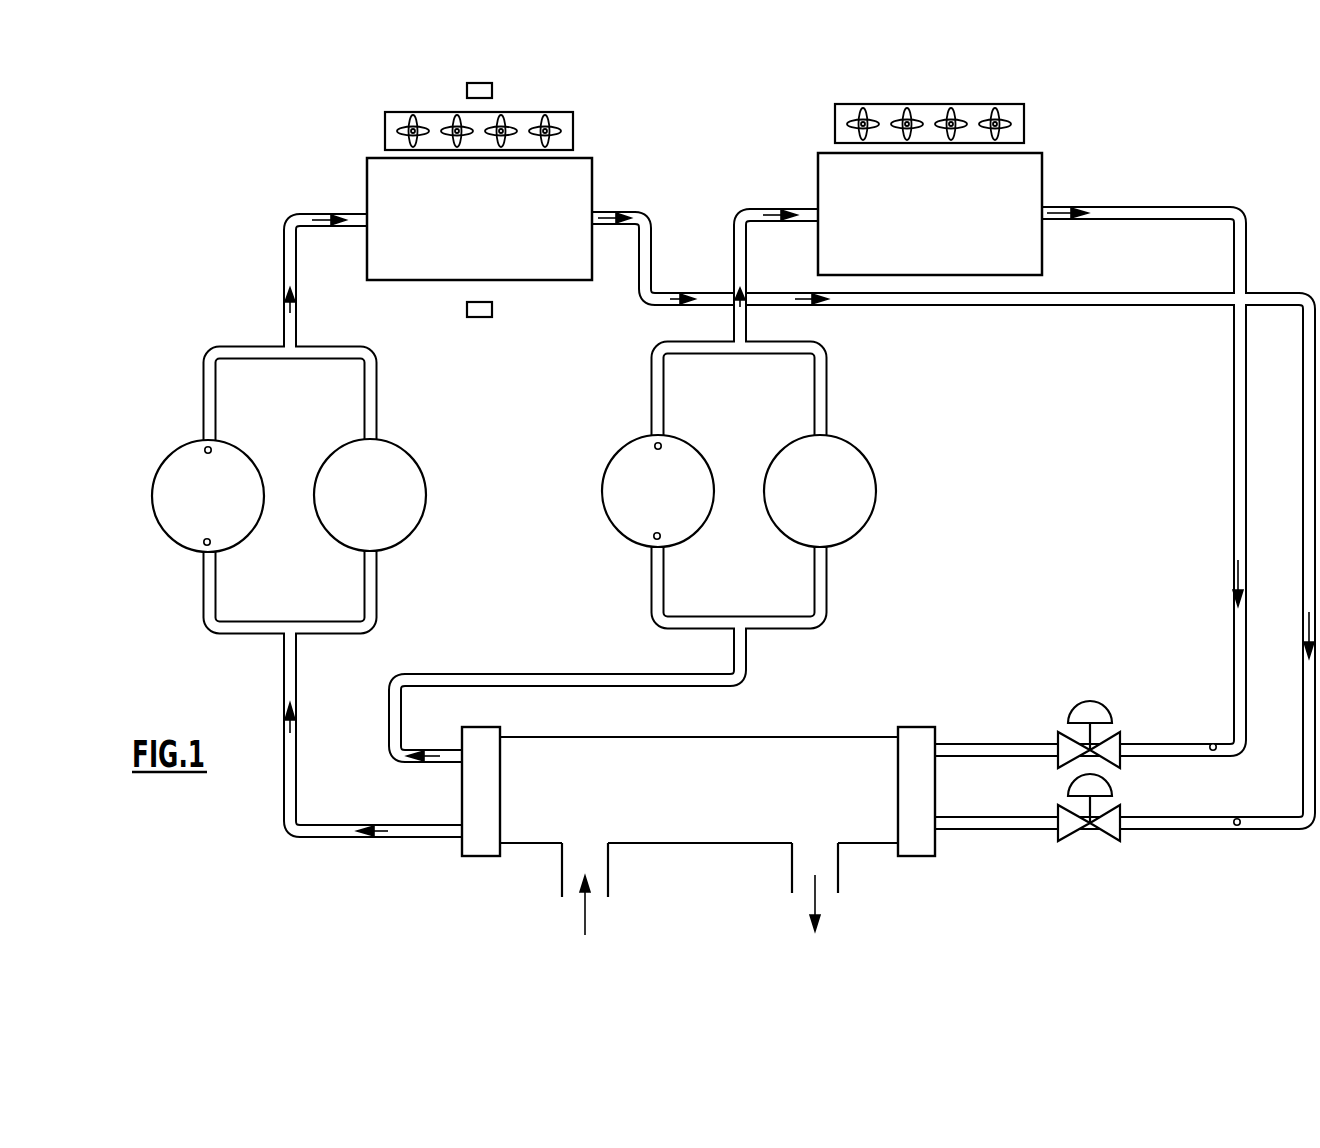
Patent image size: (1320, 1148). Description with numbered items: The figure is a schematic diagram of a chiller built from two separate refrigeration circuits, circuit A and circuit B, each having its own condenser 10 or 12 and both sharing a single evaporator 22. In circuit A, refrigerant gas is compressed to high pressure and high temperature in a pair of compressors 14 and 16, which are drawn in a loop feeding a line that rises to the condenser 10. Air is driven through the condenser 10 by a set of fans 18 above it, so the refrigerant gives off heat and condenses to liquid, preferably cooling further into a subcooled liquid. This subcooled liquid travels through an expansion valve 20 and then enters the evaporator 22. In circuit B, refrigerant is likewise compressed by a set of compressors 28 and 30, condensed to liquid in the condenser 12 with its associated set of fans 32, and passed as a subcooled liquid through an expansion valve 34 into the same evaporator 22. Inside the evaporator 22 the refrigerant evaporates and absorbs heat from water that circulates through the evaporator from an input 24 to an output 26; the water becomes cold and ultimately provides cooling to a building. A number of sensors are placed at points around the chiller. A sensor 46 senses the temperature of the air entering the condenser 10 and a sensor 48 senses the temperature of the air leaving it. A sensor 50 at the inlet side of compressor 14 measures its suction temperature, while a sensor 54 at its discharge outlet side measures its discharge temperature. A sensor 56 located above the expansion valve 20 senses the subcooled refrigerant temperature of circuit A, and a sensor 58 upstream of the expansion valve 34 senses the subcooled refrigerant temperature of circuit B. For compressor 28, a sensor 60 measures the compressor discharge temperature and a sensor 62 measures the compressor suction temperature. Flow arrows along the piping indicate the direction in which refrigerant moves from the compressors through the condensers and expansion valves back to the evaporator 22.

The condenser 10 is at (593, 172).
The condenser 12 is at (1043, 168).
The compressor 14 is at (175, 452).
The compressor 16 is at (407, 450).
The set of fans 18 is at (574, 121).
The expansion valve 20 is at (1108, 808).
The evaporator 22 is at (775, 737).
The input 24 is at (558, 875).
The output 26 is at (839, 877).
The compressor 28 is at (625, 448).
The compressor 30 is at (858, 449).
The set of fans 32 is at (1025, 114).
The expansion valve 34 is at (1108, 735).
The sensor 46 is at (493, 310).
The sensor 48 is at (493, 91).
The sensor 50 is at (213, 541).
The sensor 54 is at (214, 447).
The sensor 56 is at (1239, 825).
The sensor 58 is at (1215, 750).
The sensor 60 is at (663, 446).
The sensor 62 is at (662, 536).